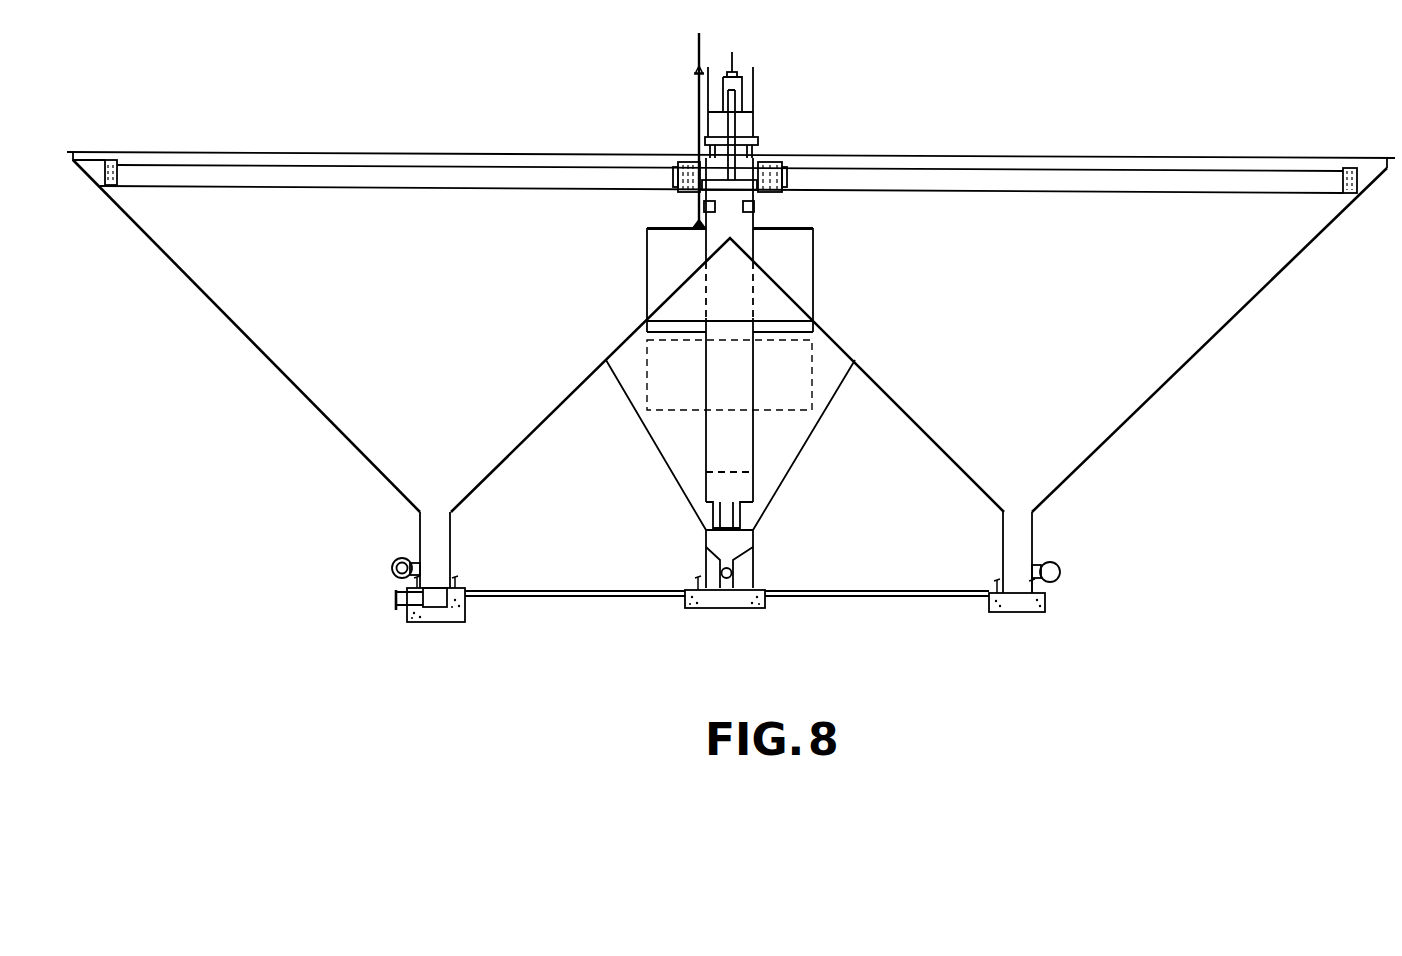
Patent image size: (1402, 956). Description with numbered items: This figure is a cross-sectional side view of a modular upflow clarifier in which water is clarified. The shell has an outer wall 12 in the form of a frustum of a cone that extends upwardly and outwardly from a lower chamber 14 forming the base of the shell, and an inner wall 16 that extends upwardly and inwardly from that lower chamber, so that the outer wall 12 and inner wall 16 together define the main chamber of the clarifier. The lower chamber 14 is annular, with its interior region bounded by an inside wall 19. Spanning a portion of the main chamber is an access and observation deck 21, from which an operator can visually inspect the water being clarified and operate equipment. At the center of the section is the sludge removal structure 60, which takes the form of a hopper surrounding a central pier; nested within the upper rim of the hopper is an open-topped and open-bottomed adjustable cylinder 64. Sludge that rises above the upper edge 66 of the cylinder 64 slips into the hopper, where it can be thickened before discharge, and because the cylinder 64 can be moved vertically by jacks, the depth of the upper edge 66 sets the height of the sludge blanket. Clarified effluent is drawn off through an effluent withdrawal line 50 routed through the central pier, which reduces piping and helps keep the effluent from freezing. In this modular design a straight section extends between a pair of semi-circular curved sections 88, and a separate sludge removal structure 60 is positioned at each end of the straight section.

The outer wall 12 is at (322, 412).
The lower chamber 14 is at (446, 557).
The inner wall 16 is at (480, 478).
The inside wall 19 is at (1003, 558).
The access and observation deck 21 is at (747, 110).
The effluent withdrawal line 50 is at (730, 575).
The sludge removal structure 60 is at (660, 236).
The adjustable cylinder 64 is at (813, 250).
The upper edge 66 is at (786, 227).
The semi-circular curved sections 88 is at (282, 355).